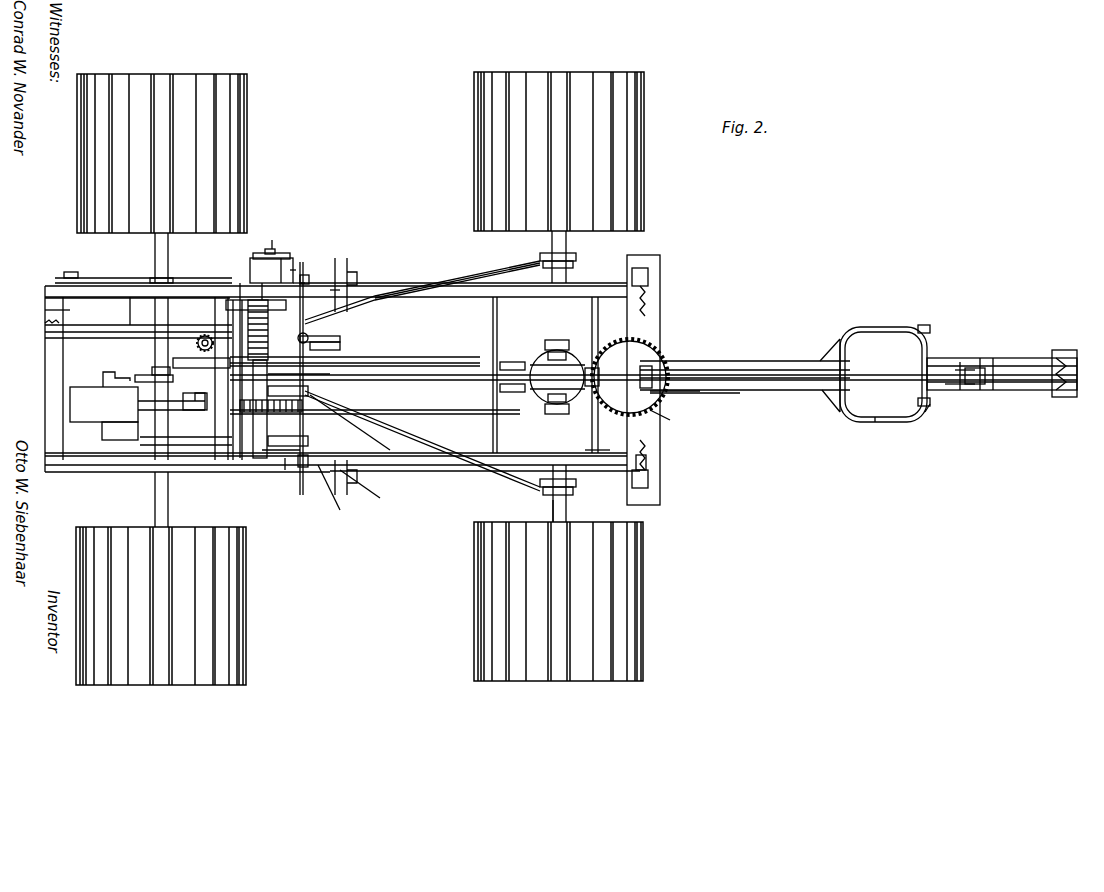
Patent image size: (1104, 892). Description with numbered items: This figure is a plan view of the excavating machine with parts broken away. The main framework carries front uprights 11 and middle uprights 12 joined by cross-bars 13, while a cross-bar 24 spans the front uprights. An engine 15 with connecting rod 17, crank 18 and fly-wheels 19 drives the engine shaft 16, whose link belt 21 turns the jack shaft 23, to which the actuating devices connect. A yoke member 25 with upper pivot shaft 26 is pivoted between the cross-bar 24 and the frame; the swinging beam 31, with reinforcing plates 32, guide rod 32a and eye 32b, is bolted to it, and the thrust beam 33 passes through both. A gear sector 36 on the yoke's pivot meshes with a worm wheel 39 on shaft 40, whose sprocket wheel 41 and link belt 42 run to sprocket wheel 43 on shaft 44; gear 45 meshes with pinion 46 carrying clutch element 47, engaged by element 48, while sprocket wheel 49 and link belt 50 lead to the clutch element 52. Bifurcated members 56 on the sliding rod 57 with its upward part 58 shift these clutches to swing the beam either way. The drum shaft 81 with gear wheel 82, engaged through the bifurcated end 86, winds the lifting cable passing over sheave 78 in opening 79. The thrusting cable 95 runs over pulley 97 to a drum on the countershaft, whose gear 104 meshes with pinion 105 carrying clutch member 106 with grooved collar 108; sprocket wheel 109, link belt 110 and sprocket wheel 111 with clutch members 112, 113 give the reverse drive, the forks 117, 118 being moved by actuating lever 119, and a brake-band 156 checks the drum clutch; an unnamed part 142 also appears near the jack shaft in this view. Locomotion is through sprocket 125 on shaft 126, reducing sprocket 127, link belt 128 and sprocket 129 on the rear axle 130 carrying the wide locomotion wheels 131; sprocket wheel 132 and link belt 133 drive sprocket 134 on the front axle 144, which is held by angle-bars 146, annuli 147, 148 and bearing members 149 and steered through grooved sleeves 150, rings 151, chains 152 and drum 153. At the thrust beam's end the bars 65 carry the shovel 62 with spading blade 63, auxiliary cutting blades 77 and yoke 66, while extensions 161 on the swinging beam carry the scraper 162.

The locomotion wheel 131 is at (655, 600).
The sprocket 129 is at (175, 275).
The rear axle 130 is at (156, 515).
The link belt 128 is at (143, 334).
The reducing sprocket 127 is at (62, 262).
The shaft 126 is at (45, 309).
The cross-bar 13 is at (436, 469).
The upright 12 is at (357, 475).
The engine 15 is at (80, 424).
The clutch element 52 is at (102, 375).
The sprocket 125 is at (85, 313).
The sprocket wheel 132 is at (147, 372).
The connecting rod 17 is at (148, 408).
The fly-wheel 19 is at (147, 443).
The engine shaft 16 is at (185, 450).
The crank 18 is at (196, 410).
The drum 153 is at (195, 345).
The link belt 21 is at (236, 450).
The upwardly extending part 58 is at (232, 300).
The clutch member 113 is at (245, 288).
The bifurcated member 56 is at (255, 360).
The jack shaft 23 is at (273, 488).
The link belt 50 is at (294, 338).
The bifurcated end 86 is at (315, 325).
The shaft 44 is at (315, 430).
The sprocket wheel 43 is at (315, 447).
The gear 45 is at (340, 388).
The pinion 46 is at (326, 381).
The actuating lever 119 is at (345, 345).
The sprocket wheel 49 is at (324, 351).
The clutch element 47 is at (377, 360).
The link belt 133 is at (416, 364).
The thrusting cable 95 is at (450, 375).
The grooved collar 108 is at (400, 410).
The rods and connecting chains 152 is at (410, 433).
The clutch element 48 is at (396, 326).
The fork 117 is at (375, 445).
The link belt 42 is at (464, 453).
The angle-bar 146 is at (500, 338).
The sprocket 134 is at (492, 352).
The gear 104 is at (252, 458).
The drum shaft 81 is at (268, 458).
The pinion 105 is at (290, 470).
The block 142 is at (305, 467).
The clutch member 106 is at (342, 499).
The brake-band 156 is at (374, 493).
The gear wheel 82 is at (276, 240).
The clutch member 112 is at (262, 258).
The sprocket wheel 111 is at (281, 258).
The sprocket wheel 109 is at (293, 270).
The link belt 110 is at (300, 283).
The laterally sliding rod 57 is at (306, 275).
The fork 118 is at (336, 283).
The grooved sleeve 150 is at (586, 504).
The ring 151 is at (586, 482).
The front axle 144 is at (552, 513).
The shaft 40 is at (595, 296).
The sprocket wheel 41 is at (596, 452).
The annulus 147 is at (540, 420).
The annulus 148 is at (548, 345).
The bearing member 149 is at (574, 416).
The worm wheel 39 is at (593, 366).
The gear sector 36 is at (648, 348).
The upper pivot shaft 26 is at (652, 366).
The yoke member 25 is at (675, 391).
The pulley 97 is at (670, 423).
The upright 11 is at (670, 484).
The cross-bar 24 is at (646, 460).
The swinging beam 31 is at (785, 361).
The thrust beam 33 is at (758, 375).
The reinforcing plate 32 is at (725, 393).
The forwardly extending bar 65 is at (830, 415).
The shovel 62 is at (868, 407).
The yoke 66 is at (880, 422).
The spading blade 63 is at (925, 420).
The auxiliary cutting blade 77 is at (918, 426).
The sheave 78 is at (960, 362).
The eye 32b is at (975, 368).
The opening 79 is at (960, 385).
The guide rod 32a is at (950, 388).
The extension 161 is at (1028, 358).
The scraper 162 is at (1064, 397).